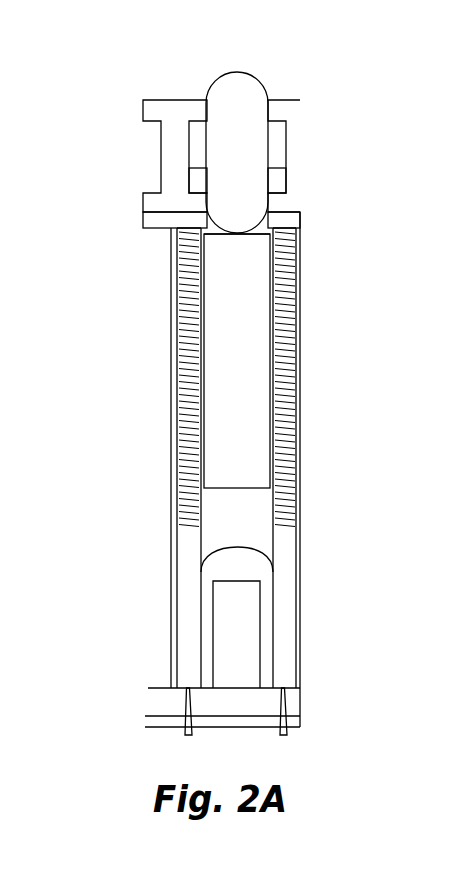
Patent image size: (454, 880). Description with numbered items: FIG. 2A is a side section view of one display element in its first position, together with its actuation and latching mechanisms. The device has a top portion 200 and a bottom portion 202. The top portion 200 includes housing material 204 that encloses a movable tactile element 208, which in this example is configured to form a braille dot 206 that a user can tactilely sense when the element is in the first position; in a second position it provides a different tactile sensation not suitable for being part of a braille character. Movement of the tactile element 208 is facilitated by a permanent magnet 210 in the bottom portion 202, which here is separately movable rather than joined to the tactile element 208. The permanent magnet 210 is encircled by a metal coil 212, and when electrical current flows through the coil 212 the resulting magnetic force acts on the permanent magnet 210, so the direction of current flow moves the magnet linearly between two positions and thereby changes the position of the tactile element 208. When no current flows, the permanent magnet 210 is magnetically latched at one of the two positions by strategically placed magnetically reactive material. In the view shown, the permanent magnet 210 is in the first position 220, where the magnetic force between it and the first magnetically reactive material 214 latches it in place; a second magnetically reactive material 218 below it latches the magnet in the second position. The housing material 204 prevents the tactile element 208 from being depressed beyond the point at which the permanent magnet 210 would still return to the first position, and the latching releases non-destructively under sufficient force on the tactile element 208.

The top portion 200 is at (335, 100).
The bottom portion 202 is at (335, 216).
The housing material 204 is at (297, 95).
The braille dot 206 is at (230, 70).
The tactile element 208 is at (265, 135).
The permanent magnet 210 is at (258, 367).
The metal coil 212 is at (184, 407).
The first magnetically reactive material 214 is at (184, 223).
The second magnetically reactive material 218 is at (218, 595).
The first position 220 is at (262, 243).